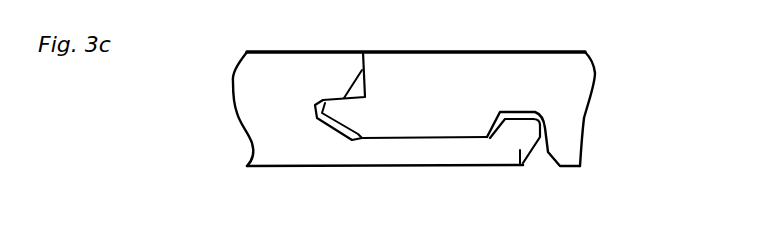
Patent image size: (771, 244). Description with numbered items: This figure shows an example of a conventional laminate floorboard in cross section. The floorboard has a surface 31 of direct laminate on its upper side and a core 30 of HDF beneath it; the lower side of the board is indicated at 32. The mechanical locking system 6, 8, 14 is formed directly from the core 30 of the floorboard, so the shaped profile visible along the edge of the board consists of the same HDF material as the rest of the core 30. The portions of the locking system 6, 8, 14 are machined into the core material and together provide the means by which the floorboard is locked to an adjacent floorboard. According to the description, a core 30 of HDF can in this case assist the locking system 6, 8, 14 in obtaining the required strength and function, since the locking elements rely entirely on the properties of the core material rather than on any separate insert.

The core 30 is at (578, 90).
The surface 31 is at (417, 50).
The lower side of base body 32 is at (337, 167).
The mechanical locking system 6 is at (422, 153).
The mechanical locking system 14 is at (543, 116).
The mechanical locking system 8 is at (520, 165).